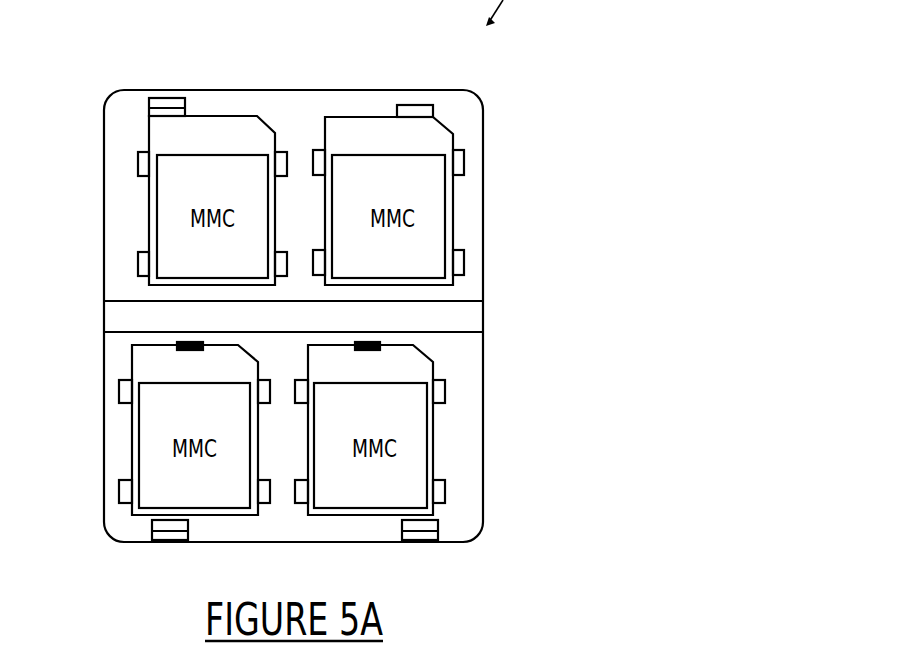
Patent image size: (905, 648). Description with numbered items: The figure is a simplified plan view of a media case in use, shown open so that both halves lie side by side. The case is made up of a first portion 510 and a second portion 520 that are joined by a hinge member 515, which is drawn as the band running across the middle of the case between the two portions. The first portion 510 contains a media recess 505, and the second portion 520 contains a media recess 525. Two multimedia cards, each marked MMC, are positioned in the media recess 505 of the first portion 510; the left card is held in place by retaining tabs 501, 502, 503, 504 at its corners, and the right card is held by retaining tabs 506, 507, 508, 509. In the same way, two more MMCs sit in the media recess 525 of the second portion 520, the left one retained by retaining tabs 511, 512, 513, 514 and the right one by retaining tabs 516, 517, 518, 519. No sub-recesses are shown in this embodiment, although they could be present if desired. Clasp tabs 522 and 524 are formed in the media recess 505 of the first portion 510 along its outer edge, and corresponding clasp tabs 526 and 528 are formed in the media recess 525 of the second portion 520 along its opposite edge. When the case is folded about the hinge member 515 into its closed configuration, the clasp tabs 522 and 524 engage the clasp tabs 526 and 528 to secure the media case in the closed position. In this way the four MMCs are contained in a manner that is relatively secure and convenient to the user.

The media recess 505 is at (329, 302).
The first portion 510 is at (483, 213).
The second portion 520 is at (483, 432).
The hinge member 515 is at (483, 312).
The media recess 525 is at (210, 528).
The retaining tab 501 is at (282, 152).
The retaining tab 502 is at (282, 280).
The retaining tab 503 is at (138, 265).
The retaining tab 504 is at (138, 165).
The retaining tab 506 is at (465, 160).
The retaining tab 507 is at (318, 150).
The retaining tab 508 is at (316, 280).
The retaining tab 509 is at (465, 262).
The retaining tab 511 is at (270, 392).
The retaining tab 512 is at (118, 393).
The retaining tab 513 is at (118, 493).
The retaining tab 514 is at (267, 505).
The retaining tab 516 is at (445, 390).
The retaining tab 517 is at (445, 490).
The retaining tab 518 is at (298, 505).
The retaining tab 519 is at (294, 396).
The clasp tab 522 is at (170, 97).
The clasp tab 524 is at (413, 105).
The clasp tab 526 is at (168, 542).
The clasp tab 528 is at (422, 542).